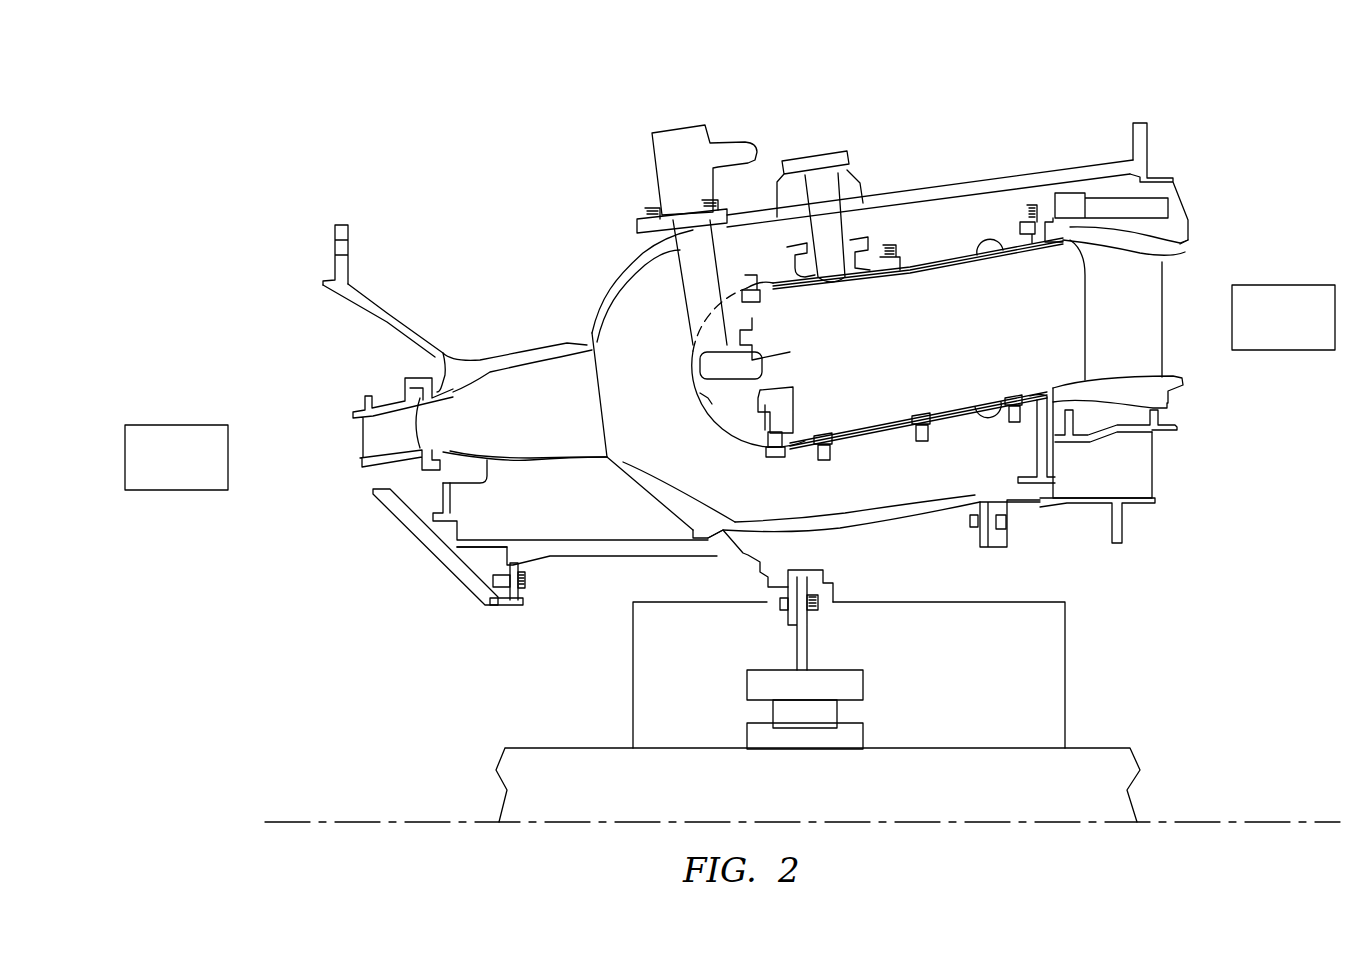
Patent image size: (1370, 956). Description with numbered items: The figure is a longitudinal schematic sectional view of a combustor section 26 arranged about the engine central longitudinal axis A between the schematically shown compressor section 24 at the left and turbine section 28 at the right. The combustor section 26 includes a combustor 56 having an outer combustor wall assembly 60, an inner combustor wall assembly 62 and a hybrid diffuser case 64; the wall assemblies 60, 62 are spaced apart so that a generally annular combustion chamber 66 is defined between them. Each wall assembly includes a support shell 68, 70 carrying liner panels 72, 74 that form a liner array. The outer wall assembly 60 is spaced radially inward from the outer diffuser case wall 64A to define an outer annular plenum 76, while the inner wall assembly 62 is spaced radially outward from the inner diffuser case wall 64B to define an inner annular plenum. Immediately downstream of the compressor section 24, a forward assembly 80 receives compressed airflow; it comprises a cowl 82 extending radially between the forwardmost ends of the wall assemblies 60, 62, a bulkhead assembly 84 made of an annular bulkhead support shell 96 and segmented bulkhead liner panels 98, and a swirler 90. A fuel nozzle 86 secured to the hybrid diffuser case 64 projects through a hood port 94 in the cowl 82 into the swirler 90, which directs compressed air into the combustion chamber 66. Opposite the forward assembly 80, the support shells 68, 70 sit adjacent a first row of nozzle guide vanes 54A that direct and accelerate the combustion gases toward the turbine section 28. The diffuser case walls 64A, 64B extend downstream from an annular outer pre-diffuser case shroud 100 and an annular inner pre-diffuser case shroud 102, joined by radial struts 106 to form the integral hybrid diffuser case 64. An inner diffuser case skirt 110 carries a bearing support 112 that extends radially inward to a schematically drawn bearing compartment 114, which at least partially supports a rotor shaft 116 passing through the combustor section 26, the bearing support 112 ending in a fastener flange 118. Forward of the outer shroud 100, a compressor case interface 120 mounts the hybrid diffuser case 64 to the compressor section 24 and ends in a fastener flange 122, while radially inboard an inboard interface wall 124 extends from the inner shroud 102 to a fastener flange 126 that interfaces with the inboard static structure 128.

The compressor section 24 is at (190, 470).
The combustor section 26 is at (880, 132).
The turbine section 28 is at (1297, 330).
The nozzle guide vanes 54A is at (1148, 334).
The combustor 56 is at (1010, 215).
The outer combustor wall assembly 60 is at (957, 253).
The inner combustor wall assembly 62 is at (918, 422).
The hybrid diffuser case 64 is at (605, 272).
The outer diffuser case wall 64A is at (915, 195).
The inner diffuser case wall 64B is at (870, 522).
The combustion chamber 66 is at (932, 341).
The outer support shell 68 is at (1003, 245).
The inner support shell 70 is at (1000, 407).
The outer liner panels 72 is at (955, 262).
The inner liner panels 74 is at (958, 405).
The outer annular plenum 76 is at (935, 240).
The forward assembly 80 is at (745, 456).
The cowl 82 is at (695, 419).
The bulkhead assembly 84 is at (772, 421).
The fuel nozzle 86 is at (697, 176).
The swirler 90 is at (790, 350).
The hood ports 94 is at (703, 395).
The bulkhead support shell 96 is at (783, 450).
The bulkhead liner panels 98 is at (797, 415).
The annular outer pre-diffuser case shroud 100 is at (527, 355).
The annular inner pre-diffuser case shroud 102 is at (567, 468).
The struts 106 is at (553, 422).
The inner diffuser case skirt 110 is at (672, 510).
The bearing support 112 is at (728, 552).
The bearing compartment 114 is at (952, 701).
The rotor shaft 116 is at (942, 807).
The fastener flange 118 is at (790, 617).
The compressor case interface 120 is at (385, 305).
The fastener flange 122 is at (348, 232).
The inboard interface wall 124 is at (492, 482).
The fastener flange 126 is at (445, 515).
The inboard static structure 128 is at (447, 566).
The engine central longitudinal axis A is at (377, 818).